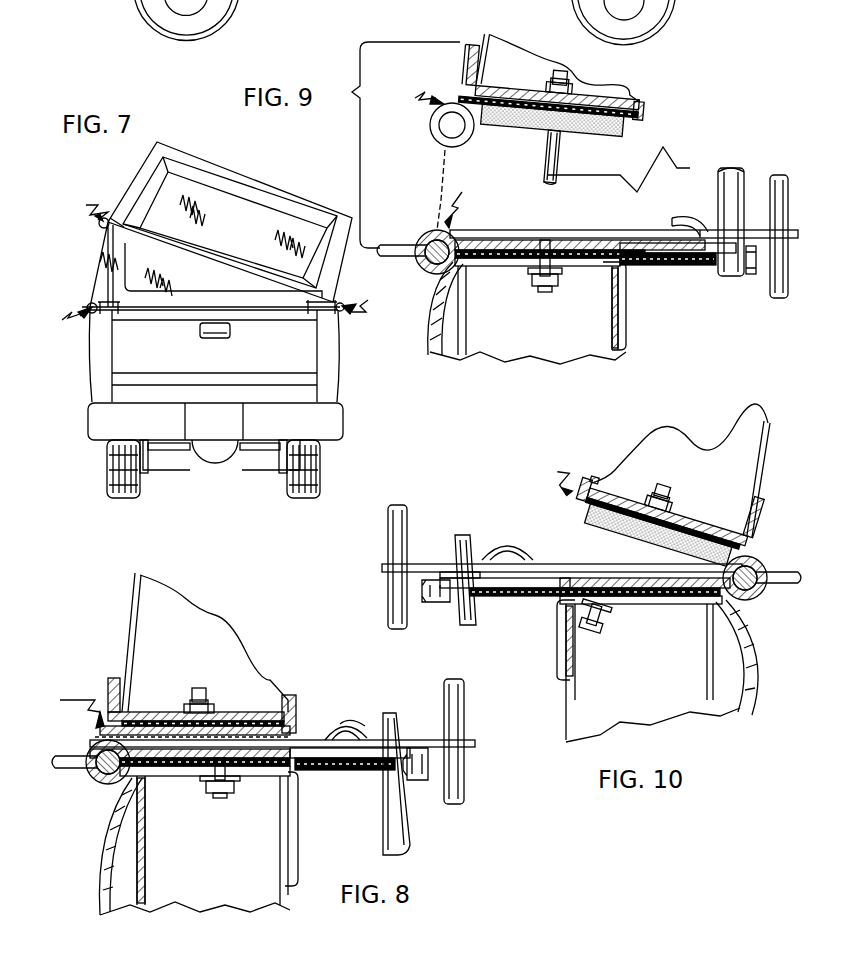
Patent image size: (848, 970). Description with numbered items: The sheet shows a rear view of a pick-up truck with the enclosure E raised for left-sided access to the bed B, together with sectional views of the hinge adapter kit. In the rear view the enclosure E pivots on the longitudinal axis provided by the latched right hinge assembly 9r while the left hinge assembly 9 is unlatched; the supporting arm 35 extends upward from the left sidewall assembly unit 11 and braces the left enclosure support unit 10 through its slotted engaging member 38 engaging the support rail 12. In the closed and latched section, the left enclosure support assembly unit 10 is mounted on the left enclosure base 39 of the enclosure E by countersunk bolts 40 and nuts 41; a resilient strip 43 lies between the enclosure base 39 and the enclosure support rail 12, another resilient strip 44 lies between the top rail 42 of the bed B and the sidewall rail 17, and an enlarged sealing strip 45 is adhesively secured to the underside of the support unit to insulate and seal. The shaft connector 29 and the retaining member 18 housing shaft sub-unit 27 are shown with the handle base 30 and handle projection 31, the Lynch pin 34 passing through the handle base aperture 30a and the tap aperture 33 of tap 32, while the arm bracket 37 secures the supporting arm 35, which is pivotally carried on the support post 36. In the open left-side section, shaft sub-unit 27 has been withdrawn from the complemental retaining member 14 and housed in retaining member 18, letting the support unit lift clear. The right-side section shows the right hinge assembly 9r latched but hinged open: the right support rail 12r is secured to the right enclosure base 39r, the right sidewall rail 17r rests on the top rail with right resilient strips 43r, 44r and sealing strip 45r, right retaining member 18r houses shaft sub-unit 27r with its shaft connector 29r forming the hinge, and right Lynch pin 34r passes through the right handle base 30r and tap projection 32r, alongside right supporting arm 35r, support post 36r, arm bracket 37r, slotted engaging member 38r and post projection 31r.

In FIG. 7, the left hinge assembly 9 is at (98, 224).
In FIG. 9, the left hinge assembly 9 is at (430, 120).
In FIG. 8, the left hinge assembly 9 is at (72, 708).
In FIG. 7, the right hinge assembly 9r is at (352, 320).
In FIG. 10, the right hinge assembly 9r is at (541, 494).
In FIG. 7, the left enclosure support assembly unit 10 is at (83, 206).
In FIG. 9, the left enclosure support assembly unit 10 is at (416, 93).
In FIG. 7, the left sidewall assembly unit 11 is at (66, 318).
In FIG. 9, the left sidewall assembly unit 11 is at (455, 190).
In FIG. 9, the enclosure support rail 12 is at (659, 106).
In FIG. 8, the enclosure support rail 12 is at (296, 720).
In FIG. 10, the right enclosure support rail 12r is at (543, 482).
In FIG. 9, the complemental retaining member 14 is at (440, 136).
In FIG. 9, the sidewall assembly rail 17 is at (476, 244).
In FIG. 8, the sidewall assembly rail 17 is at (264, 760).
In FIG. 10, the right sidewall assembly rail 17r is at (626, 583).
In FIG. 9, the retaining member 18 is at (426, 272).
In FIG. 8, the retaining member 18 is at (100, 784).
In FIG. 10, the right retaining member 18r is at (742, 602).
In FIG. 9, the shaft sub-unit 27 is at (440, 284).
In FIG. 8, the shaft sub-unit 27 is at (94, 774).
In FIG. 10, the right shaft sub-unit 27r is at (748, 596).
In FIG. 9, the shaft connector 29 is at (390, 246).
In FIG. 8, the shaft connector 29 is at (70, 755).
In FIG. 10, the right shaft connector 29r is at (778, 570).
In FIG. 9, the handle base 30 is at (616, 232).
In FIG. 8, the handle base 30 is at (472, 742).
In FIG. 9, the handle base aperture 30a is at (712, 228).
In FIG. 10, the right handle base 30r is at (382, 568).
In FIG. 9, the handle projection 31 is at (778, 175).
In FIG. 8, the handle projection 31 is at (444, 690).
In FIG. 10, the post projection 31r is at (400, 506).
In FIG. 9, the tap 32 is at (682, 262).
In FIG. 8, the tap 32 is at (346, 772).
In FIG. 10, the tap projection 32r is at (500, 596).
In FIG. 9, the tap aperture 33 is at (716, 254).
In FIG. 8, the Lynch pin 34 is at (408, 830).
In FIG. 10, the right Lynch pin 34r is at (464, 535).
In FIG. 7, the supporting arm 35 is at (108, 265).
In FIG. 8, the supporting arm 35 is at (341, 726).
In FIG. 10, the right supporting arm 35r is at (480, 600).
In FIG. 9, the support post 36 is at (751, 276).
In FIG. 8, the support post 36 is at (374, 772).
In FIG. 10, the right support post 36r is at (434, 604).
In FIG. 9, the arm bracket 37 is at (682, 218).
In FIG. 8, the arm bracket 37 is at (324, 768).
In FIG. 10, the right arm bracket 37r is at (509, 550).
In FIG. 8, the slotted engaging member 38 is at (328, 738).
In FIG. 10, the right slotted engaging member 38r is at (526, 596).
In FIG. 9, the left enclosure base 39 is at (444, 65).
In FIG. 8, the left enclosure base 39 is at (106, 686).
In FIG. 10, the right enclosure base 39r is at (569, 469).
In FIG. 10, the countersunk bolt 40 is at (656, 526).
In FIG. 8, the countersunk bolt 40 is at (200, 688).
In FIG. 10, the nut 41 is at (666, 543).
In FIG. 8, the nut 41 is at (186, 700).
In FIG. 9, the top rail 42 is at (485, 354).
In FIG. 10, the top rail 42 is at (592, 606).
In FIG. 8, the top rail 42 is at (172, 778).
In FIG. 9, the resilient strip 43 is at (560, 57).
In FIG. 8, the resilient strip 43 is at (155, 718).
In FIG. 10, the right resilient strip 43r is at (677, 483).
In FIG. 9, the resilient strip 44 is at (584, 268).
In FIG. 8, the resilient strip 44 is at (192, 775).
In FIG. 10, the right resilient strip 44r is at (672, 600).
In FIG. 9, the sealing strip 45 is at (551, 136).
In FIG. 8, the sealing strip 45 is at (236, 726).
In FIG. 10, the right sealing strip 45r is at (638, 552).
In FIG. 7, the enclosure E is at (132, 171).
In FIG. 9, the enclosure E is at (480, 32).
In FIG. 10, the enclosure E is at (762, 450).
In FIG. 8, the enclosure E is at (128, 612).
In FIG. 7, the pick-up bed B is at (90, 338).
In FIG. 9, the pick-up bed B is at (426, 340).
In FIG. 10, the pick-up bed B is at (750, 666).
In FIG. 8, the pick-up bed B is at (100, 870).